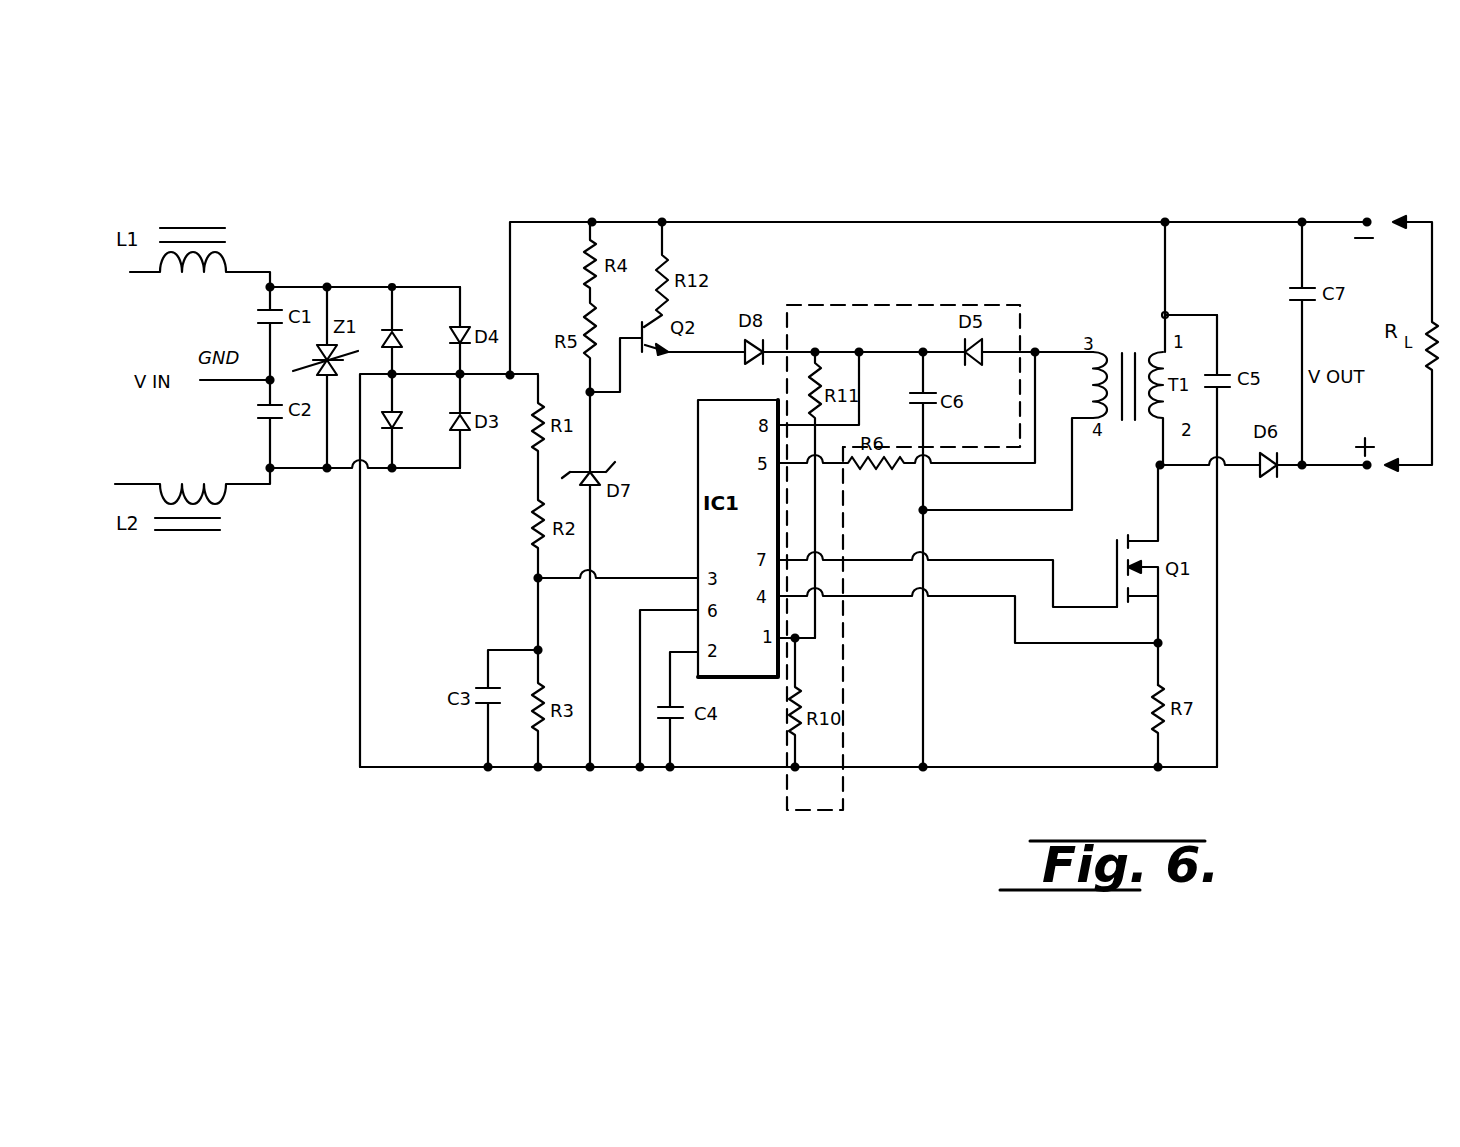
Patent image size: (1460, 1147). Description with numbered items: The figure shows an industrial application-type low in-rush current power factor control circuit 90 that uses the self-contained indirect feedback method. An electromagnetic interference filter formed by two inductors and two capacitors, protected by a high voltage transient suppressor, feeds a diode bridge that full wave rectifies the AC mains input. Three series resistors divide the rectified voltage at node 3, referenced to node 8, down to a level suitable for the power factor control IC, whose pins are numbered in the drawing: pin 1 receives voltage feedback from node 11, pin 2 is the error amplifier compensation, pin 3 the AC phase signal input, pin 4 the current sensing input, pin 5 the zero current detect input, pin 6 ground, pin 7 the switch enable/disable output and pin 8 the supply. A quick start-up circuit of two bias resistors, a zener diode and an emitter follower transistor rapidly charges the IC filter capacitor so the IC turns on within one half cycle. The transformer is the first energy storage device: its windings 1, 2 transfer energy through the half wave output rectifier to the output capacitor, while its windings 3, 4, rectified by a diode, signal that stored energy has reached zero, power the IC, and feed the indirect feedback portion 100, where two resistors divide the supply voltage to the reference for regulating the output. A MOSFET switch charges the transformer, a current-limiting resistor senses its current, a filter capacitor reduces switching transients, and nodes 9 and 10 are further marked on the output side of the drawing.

The winding terminal 1 is at (392, 287).
The winding terminal 2 is at (392, 468).
The node 3 is at (662, 222).
The winding terminal 4 is at (538, 578).
The pin 5 is at (1037, 352).
The pin 6 is at (1108, 591).
The pin 7 is at (1156, 656).
The node 8 is at (538, 767).
The output node 9 is at (1300, 470).
The transformer secondary node 10 is at (1158, 467).
The node 11 is at (795, 641).
The low in-rush current power factor control circuit 90 is at (584, 792).
The first indirect feedback portion 100 is at (822, 815).